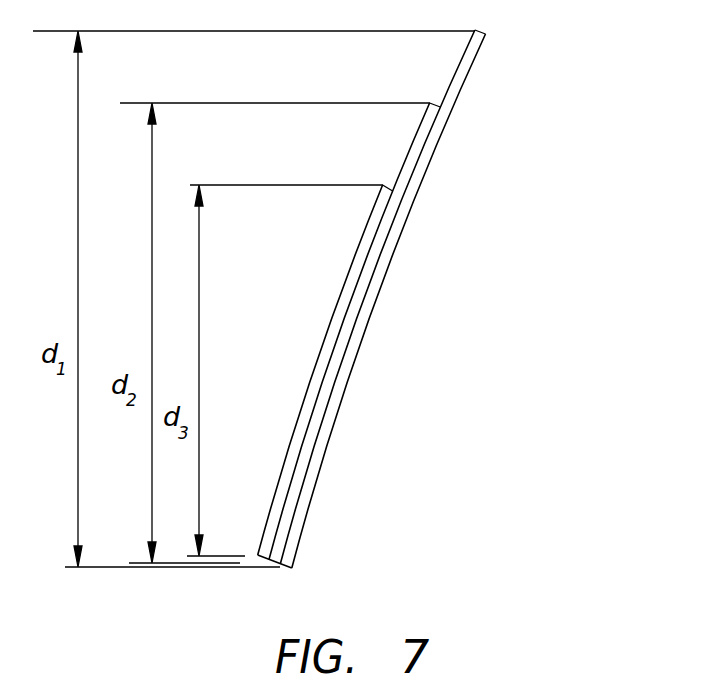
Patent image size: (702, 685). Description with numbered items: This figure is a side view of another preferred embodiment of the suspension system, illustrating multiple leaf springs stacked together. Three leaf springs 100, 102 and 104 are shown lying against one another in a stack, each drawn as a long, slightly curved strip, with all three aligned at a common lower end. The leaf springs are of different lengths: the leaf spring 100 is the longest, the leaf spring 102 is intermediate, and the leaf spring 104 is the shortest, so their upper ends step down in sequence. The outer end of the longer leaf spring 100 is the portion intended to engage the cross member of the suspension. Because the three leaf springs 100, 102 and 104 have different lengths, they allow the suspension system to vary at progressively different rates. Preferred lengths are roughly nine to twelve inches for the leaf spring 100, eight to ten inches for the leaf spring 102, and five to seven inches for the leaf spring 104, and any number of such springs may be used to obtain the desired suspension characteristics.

The leaf spring 100 is at (463, 82).
The leaf spring 102 is at (363, 285).
The leaf spring 104 is at (312, 397).